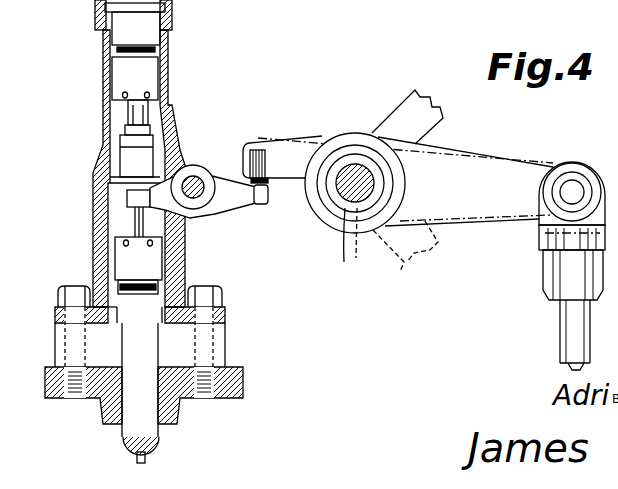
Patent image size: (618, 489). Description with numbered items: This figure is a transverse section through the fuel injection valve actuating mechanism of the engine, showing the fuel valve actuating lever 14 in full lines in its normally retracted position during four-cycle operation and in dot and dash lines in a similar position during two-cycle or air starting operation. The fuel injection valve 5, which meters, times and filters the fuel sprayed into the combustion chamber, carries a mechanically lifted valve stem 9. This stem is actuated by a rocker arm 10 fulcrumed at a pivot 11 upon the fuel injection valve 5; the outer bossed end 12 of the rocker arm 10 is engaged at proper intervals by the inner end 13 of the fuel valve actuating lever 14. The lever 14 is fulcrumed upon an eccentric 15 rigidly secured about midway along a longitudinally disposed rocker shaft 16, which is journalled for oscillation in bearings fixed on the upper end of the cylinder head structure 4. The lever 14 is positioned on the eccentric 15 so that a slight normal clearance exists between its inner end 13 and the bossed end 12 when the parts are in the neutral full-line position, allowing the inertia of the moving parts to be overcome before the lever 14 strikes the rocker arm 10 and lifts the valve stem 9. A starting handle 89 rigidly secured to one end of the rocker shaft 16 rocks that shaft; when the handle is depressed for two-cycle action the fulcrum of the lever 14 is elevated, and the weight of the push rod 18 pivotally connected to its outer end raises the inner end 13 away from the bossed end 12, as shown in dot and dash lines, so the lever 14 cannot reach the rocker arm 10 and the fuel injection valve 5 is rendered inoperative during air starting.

The cylinder head structure 4 is at (243, 385).
The fuel injection valve 5 is at (92, 163).
The valve stem 9 is at (139, 222).
The rocker arm 10 is at (228, 200).
The fulcrum 11 is at (193, 175).
The outer bossed end 12 is at (262, 204).
The inner end 13 is at (267, 157).
The fuel valve actuating lever 14 is at (495, 172).
The eccentric 15 is at (356, 248).
The rocker shaft 16 is at (358, 172).
The push rod 18 is at (568, 329).
The starting handle 89 is at (416, 92).